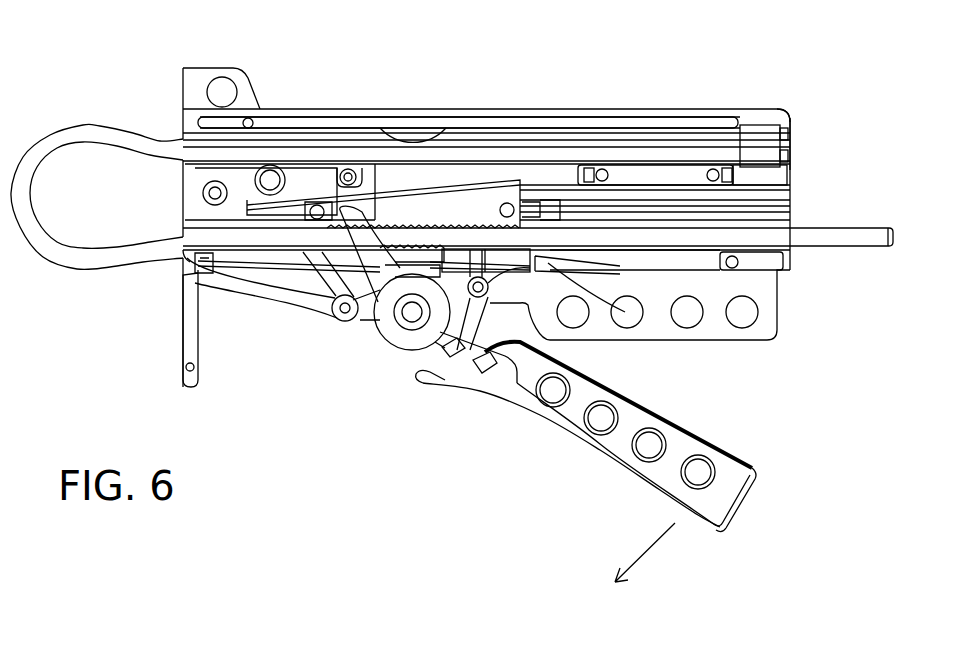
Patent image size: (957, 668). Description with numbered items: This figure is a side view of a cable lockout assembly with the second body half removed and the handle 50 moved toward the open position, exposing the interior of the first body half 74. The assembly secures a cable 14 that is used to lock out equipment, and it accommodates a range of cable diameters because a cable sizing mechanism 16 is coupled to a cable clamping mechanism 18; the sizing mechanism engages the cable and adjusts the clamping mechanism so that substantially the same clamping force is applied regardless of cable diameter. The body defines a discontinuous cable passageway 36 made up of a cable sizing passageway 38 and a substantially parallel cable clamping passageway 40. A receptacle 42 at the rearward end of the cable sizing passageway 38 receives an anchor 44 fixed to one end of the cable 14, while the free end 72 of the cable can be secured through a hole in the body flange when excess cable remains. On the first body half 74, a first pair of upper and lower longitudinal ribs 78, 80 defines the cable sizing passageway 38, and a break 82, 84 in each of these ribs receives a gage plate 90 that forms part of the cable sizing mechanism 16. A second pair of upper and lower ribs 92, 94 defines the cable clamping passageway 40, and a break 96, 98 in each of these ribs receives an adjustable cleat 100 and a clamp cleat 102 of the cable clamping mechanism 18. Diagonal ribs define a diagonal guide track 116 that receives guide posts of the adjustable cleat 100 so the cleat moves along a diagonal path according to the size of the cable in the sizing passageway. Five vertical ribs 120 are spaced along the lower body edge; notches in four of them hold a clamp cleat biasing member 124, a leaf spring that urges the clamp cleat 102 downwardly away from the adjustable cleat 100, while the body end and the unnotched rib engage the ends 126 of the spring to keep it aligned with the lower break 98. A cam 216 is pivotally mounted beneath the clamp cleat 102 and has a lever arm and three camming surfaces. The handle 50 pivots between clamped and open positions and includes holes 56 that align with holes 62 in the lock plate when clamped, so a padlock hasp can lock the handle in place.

The cable 14 is at (45, 92).
The cable sizing mechanism 16 is at (458, 112).
The cable clamping mechanism 18 is at (327, 162).
The cable passageway 36 is at (183, 220).
The cable sizing passageway 38 is at (592, 129).
The cable clamping passageway 40 is at (740, 207).
The receptacle 42 is at (792, 125).
The anchor 44 is at (765, 137).
The handle 50 is at (713, 530).
The holes 56 is at (700, 477).
The holes 62 is at (622, 317).
The free end 72 is at (893, 227).
The first body half 74 is at (793, 110).
The upper rib 78 is at (242, 109).
The lower rib 80 is at (285, 166).
The break 82 is at (368, 150).
The break 84 is at (365, 162).
The gage plate 90 is at (408, 133).
The upper rib 92 is at (773, 263).
The lower rib 94 is at (723, 214).
The break 96 is at (555, 218).
The break 98 is at (413, 260).
The adjustable cleat 100 is at (496, 187).
The clamp cleat 102 is at (358, 345).
The diagonal guide track 116 is at (543, 165).
The vertical ribs 120 is at (210, 283).
The clamp cleat biasing member 124 is at (238, 264).
The ends 126 is at (200, 264).
The cam 216 is at (432, 258).